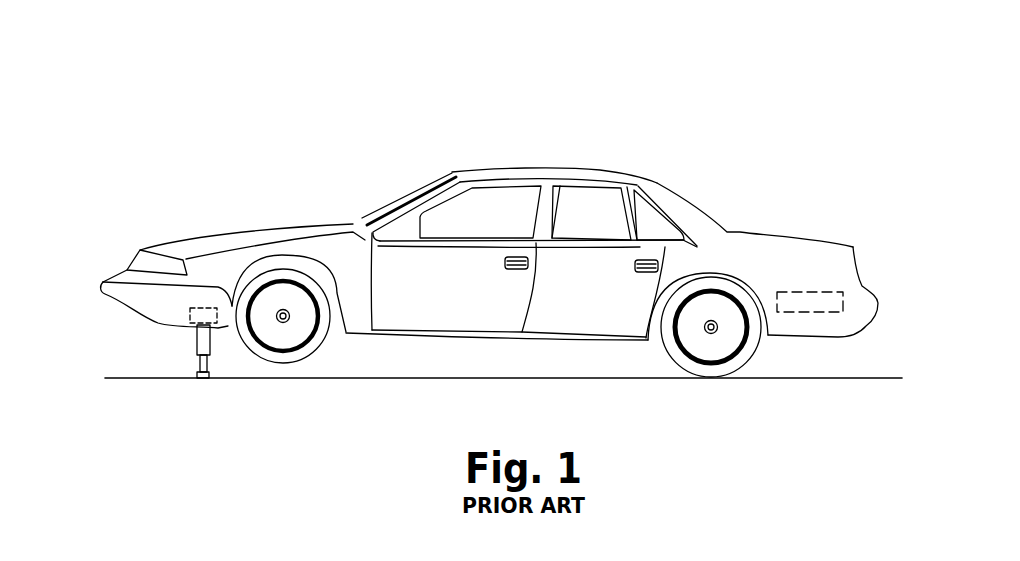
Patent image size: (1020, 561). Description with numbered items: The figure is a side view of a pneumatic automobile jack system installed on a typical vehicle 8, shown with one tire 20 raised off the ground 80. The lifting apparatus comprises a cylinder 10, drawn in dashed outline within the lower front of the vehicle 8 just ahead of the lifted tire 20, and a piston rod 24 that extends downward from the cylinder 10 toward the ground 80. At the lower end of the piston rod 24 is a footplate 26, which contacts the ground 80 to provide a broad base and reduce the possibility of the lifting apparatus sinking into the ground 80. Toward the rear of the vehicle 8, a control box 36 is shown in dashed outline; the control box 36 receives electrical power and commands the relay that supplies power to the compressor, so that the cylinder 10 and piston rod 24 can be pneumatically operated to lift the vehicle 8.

The vehicle 8 is at (621, 176).
The cylinder 10 is at (197, 340).
The tire 20 is at (315, 345).
The piston rod 24 is at (194, 366).
The footplate 26 is at (200, 380).
The control box 36 is at (814, 294).
The ground 80 is at (273, 378).